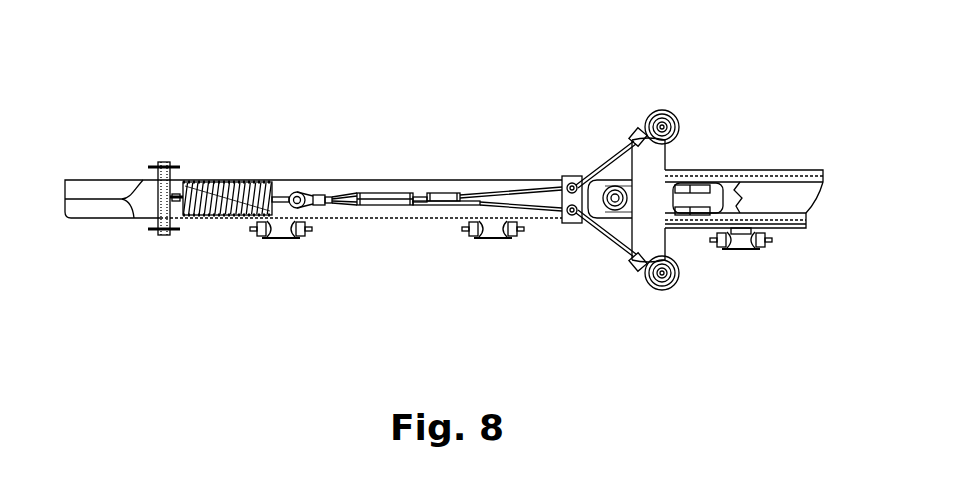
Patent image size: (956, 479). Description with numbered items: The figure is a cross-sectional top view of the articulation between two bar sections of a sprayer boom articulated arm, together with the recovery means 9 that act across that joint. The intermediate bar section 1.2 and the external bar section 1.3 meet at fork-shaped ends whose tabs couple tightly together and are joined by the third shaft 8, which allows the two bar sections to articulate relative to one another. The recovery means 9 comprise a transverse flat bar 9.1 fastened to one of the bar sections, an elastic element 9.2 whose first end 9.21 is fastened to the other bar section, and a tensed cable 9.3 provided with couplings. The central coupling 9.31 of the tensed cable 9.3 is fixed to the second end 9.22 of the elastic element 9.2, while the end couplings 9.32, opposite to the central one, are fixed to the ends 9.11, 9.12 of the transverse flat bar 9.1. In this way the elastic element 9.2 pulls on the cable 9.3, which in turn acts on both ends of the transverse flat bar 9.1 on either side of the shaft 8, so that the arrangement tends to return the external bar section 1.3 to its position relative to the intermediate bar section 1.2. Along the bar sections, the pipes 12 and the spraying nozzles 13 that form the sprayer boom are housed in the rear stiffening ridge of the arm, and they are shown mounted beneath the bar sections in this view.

The recovery means 9 is at (439, 78).
The intermediate bar section 1.2 is at (778, 193).
The external bar section 1.3 is at (95, 212).
The third shaft 8 is at (612, 207).
The transverse flat bar 9.1 is at (652, 202).
The end of the transverse flat bar 9.11 is at (633, 132).
The end of the transverse flat bar 9.12 is at (632, 270).
The elastic element 9.2 is at (222, 180).
The first end of the elastic element 9.21 is at (157, 195).
The second end of the elastic element 9.22 is at (283, 192).
The tensed cable 9.3 is at (480, 193).
The central coupling 9.31 is at (306, 188).
The end coupling 9.32 is at (648, 133).
The pipes 12 is at (778, 228).
The spraying nozzles 13 is at (487, 233).